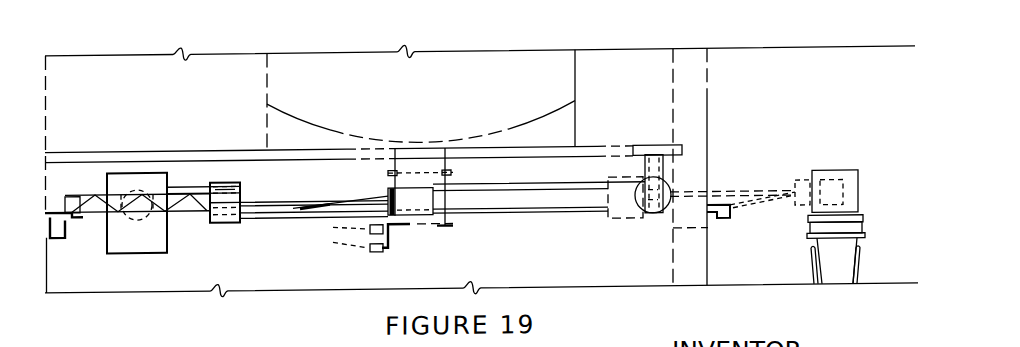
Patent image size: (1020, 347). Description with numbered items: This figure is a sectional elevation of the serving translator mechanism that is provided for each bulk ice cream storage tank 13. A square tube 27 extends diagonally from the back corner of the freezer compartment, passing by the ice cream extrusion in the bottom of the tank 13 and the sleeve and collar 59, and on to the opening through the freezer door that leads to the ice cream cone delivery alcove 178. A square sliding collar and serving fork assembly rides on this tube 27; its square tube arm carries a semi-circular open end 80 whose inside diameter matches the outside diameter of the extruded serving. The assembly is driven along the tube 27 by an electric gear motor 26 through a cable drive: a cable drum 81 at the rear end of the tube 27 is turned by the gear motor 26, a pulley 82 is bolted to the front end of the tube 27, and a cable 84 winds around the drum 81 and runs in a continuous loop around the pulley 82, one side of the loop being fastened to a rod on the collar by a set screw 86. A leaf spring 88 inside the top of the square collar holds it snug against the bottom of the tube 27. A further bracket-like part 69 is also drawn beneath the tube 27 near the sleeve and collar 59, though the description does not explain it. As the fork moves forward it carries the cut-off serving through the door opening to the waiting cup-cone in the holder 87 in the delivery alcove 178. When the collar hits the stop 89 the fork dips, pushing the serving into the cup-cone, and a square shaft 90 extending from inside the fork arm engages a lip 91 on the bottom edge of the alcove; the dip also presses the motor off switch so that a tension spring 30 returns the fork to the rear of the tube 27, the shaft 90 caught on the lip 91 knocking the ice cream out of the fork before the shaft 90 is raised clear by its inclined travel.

The bulk ice cream storage tank 13 is at (575, 80).
The ice cream cone delivery alcove 178 is at (756, 64).
The tension spring 30 is at (77, 199).
The cable drum 81 is at (124, 206).
The electric gear motor 26 is at (147, 253).
The leaf spring 88 is at (220, 190).
The set screw 86 is at (233, 218).
The cable 84 is at (315, 216).
The bracket 69 is at (407, 227).
The sleeve and collar 59 is at (453, 169).
The square tube 27 is at (522, 209).
The pulley 82 is at (672, 183).
The stop 89 is at (655, 220).
The square shaft 90 is at (733, 209).
The lip 91 is at (715, 223).
The semi-circular open end 80 is at (828, 184).
The holder 87 is at (862, 271).